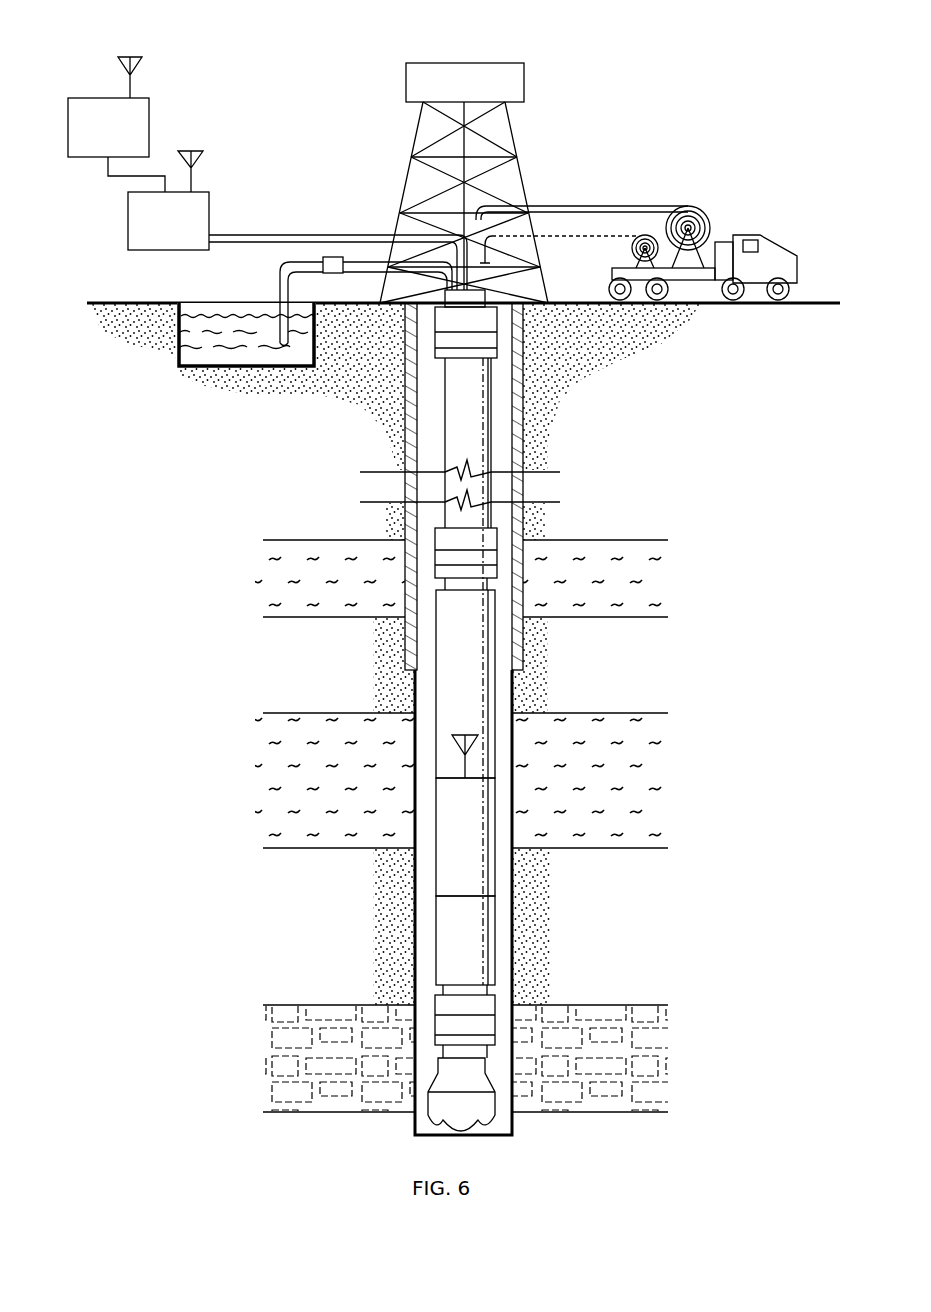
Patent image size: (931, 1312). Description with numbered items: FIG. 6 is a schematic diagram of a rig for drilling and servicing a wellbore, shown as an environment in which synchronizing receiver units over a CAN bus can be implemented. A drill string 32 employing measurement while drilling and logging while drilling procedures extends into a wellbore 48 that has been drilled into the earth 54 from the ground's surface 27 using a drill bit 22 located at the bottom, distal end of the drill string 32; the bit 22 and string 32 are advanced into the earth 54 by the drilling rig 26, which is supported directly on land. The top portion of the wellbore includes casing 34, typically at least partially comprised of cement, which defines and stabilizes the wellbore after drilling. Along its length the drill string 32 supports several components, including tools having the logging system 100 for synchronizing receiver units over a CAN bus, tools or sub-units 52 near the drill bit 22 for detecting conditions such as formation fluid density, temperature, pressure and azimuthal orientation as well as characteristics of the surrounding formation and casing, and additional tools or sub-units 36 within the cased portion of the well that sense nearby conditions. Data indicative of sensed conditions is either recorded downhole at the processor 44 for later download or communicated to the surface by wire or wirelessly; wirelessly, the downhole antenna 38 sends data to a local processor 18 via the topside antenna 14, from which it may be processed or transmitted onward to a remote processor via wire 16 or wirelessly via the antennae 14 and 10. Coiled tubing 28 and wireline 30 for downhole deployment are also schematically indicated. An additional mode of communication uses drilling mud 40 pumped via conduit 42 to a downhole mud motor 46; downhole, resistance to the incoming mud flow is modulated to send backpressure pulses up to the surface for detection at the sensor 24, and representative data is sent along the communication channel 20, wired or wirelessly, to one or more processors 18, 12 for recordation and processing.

The antenna 10 is at (135, 57).
The processor 12 is at (150, 121).
The topside antenna 14 is at (204, 160).
The wire 16 is at (105, 168).
The local processor 18 is at (130, 234).
The communication channel 20 is at (228, 247).
The drill bit 22 is at (490, 1110).
The sensor 24 is at (340, 257).
The drilling rig 26 is at (526, 147).
The ground's surface 27 is at (107, 290).
The coiled tubing 28 is at (718, 196).
The wireline 30 is at (622, 249).
The drill string 32 is at (463, 413).
The casing 34 is at (524, 445).
The tools or sub-units 36 is at (480, 543).
The downhole antenna 38 is at (470, 735).
The drilling mud 40 is at (210, 355).
The conduit 42 is at (278, 282).
The processor 44 is at (443, 862).
The downhole mud motor 46 is at (448, 958).
The wellbore 48 is at (510, 915).
The tools or sub-units 52 is at (440, 1005).
The earth 54 is at (347, 428).
The logging system 100 is at (450, 672).